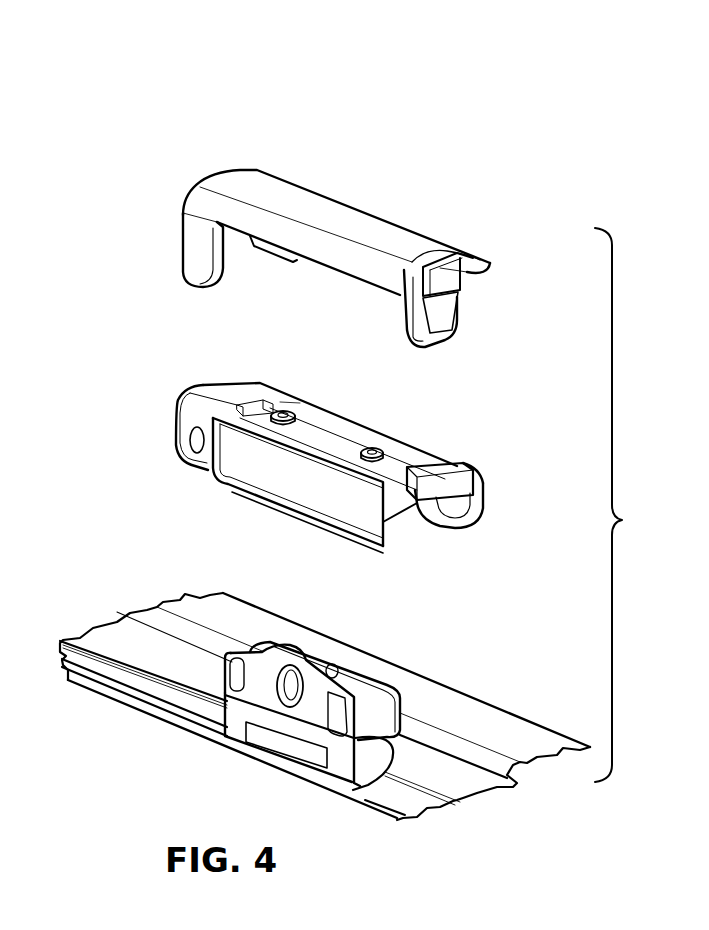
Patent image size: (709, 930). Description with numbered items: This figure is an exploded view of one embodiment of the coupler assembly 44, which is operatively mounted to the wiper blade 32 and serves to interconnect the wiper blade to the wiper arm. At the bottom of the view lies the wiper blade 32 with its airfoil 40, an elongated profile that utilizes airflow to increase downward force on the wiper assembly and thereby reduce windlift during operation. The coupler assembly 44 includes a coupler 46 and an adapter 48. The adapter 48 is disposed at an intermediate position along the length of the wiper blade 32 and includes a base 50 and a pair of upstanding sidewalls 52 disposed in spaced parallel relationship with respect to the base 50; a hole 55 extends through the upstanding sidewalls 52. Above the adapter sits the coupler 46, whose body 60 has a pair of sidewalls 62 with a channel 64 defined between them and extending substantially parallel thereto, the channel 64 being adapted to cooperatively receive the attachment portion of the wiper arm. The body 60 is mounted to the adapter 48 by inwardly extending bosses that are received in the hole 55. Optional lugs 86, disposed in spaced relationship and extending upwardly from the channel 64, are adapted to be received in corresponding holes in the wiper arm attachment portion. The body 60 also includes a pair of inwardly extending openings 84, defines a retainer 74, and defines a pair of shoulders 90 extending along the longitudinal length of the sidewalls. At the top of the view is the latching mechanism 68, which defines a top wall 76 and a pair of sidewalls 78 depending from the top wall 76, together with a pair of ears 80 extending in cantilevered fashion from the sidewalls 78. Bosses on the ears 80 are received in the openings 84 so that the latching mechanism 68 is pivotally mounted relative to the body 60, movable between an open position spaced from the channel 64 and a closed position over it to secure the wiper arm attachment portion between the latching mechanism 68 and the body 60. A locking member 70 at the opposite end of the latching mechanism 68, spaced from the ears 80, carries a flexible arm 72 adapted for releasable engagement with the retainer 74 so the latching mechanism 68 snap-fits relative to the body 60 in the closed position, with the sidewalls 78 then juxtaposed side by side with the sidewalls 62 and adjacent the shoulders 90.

The wiper blade 32 is at (151, 718).
The airfoil 40 is at (513, 723).
The coupler assembly 44 is at (138, 152).
The coupler 46 is at (494, 497).
The adapter 48 is at (397, 689).
The base 50 is at (390, 738).
The upstanding sidewalls 52 is at (241, 653).
The hole 55 is at (290, 690).
The body 60 is at (410, 443).
The sidewalls 62 is at (255, 477).
The channel 64 is at (320, 430).
The latching mechanism 68 is at (312, 183).
The locking member 70 is at (487, 267).
The flexible arm 72 is at (460, 300).
The retainer 74 is at (463, 470).
The top wall 76 is at (368, 226).
The sidewalls 78 is at (280, 238).
The ears 80 is at (190, 262).
The inwardly extending openings 84 is at (192, 440).
The lugs 86 is at (283, 412).
The shoulders 90 is at (312, 516).